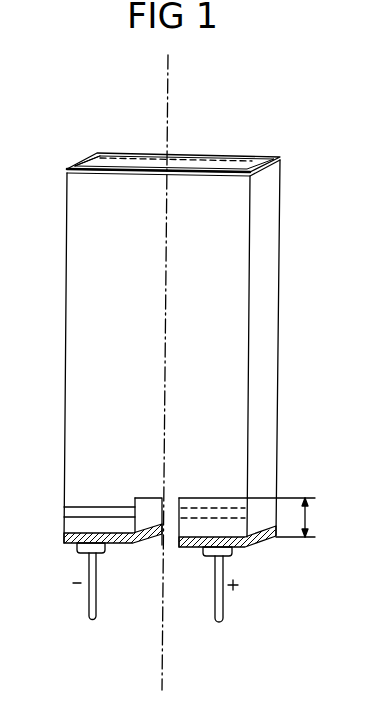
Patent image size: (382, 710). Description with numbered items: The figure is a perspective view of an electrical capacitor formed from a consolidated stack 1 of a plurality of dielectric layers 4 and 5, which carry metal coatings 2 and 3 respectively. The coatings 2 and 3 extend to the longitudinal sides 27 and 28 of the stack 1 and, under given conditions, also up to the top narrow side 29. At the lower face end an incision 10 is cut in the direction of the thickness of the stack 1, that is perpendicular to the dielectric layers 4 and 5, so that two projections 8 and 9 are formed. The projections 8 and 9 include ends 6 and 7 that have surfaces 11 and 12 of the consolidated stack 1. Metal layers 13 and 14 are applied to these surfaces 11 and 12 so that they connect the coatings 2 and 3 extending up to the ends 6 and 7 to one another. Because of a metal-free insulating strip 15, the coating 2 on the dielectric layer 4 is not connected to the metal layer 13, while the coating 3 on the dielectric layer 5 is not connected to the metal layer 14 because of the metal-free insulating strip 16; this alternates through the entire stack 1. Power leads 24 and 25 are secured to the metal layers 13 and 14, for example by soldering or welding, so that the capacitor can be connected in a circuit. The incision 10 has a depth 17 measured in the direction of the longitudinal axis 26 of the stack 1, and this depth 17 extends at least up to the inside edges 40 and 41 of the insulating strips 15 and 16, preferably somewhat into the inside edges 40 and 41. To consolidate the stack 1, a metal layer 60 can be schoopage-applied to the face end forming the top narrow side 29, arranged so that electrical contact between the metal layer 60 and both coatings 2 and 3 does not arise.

The consolidated stack 1 is at (245, 213).
The coating 2 is at (75, 423).
The coating 3 is at (248, 412).
The dielectric layer 4 is at (67, 375).
The dielectric layer 5 is at (248, 378).
The end 6 is at (117, 548).
The end 7 is at (190, 547).
The projection 8 is at (70, 523).
The projection 9 is at (254, 544).
The incision 10 is at (173, 553).
The surface 11 is at (139, 544).
The surface 12 is at (266, 545).
The metal layer 13 is at (72, 544).
The metal layer 14 is at (243, 548).
The metal-free insulating strip 15 is at (64, 508).
The metal-free insulating strip 16 is at (226, 506).
The depth 17 is at (311, 512).
The power lead 24 is at (88, 610).
The power lead 25 is at (224, 616).
The longitudinal axis 26 is at (168, 100).
The longitudinal side 27 is at (67, 335).
The longitudinal side 28 is at (270, 343).
The top narrow side 29 is at (204, 161).
The inside edge 40 is at (97, 507).
The inside edge 41 is at (198, 505).
The metal layer 60 is at (255, 151).